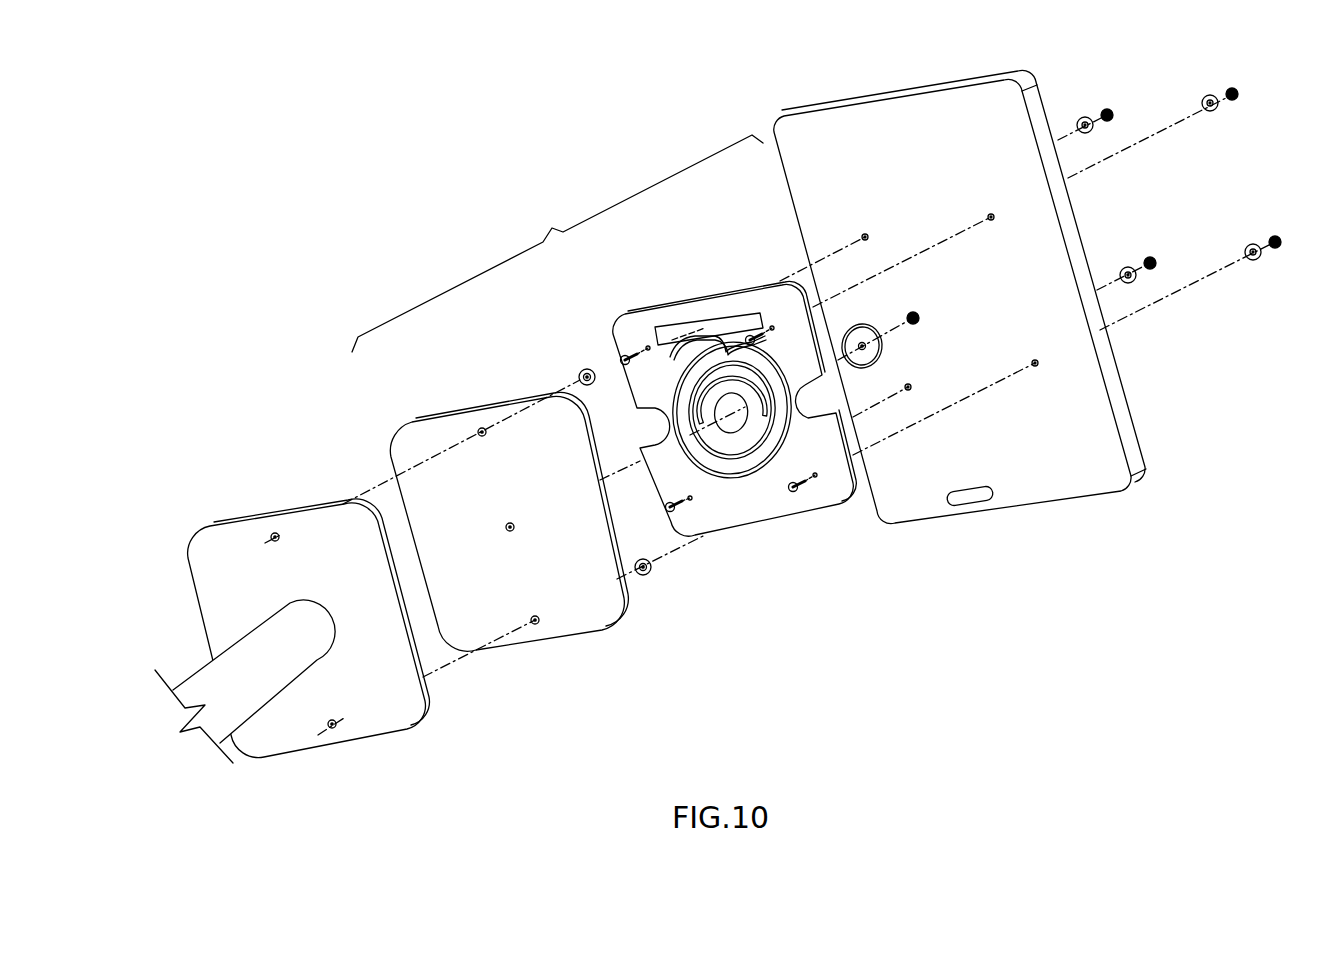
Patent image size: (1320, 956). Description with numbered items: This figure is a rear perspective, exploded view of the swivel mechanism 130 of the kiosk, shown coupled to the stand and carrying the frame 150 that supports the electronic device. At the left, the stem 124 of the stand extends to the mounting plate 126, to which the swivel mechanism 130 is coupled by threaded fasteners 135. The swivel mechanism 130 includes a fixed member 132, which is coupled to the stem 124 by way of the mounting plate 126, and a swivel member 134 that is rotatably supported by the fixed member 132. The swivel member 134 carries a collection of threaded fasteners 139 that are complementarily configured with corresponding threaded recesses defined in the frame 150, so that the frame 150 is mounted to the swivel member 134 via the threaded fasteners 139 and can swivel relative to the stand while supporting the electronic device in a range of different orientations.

The stem 124 is at (218, 674).
The mounting plate 126 is at (404, 734).
The swivel mechanism 130 is at (557, 243).
The fixed member 132 is at (390, 447).
The swivel member 134 is at (617, 332).
The threaded fasteners 135 is at (582, 372).
The threaded fasteners 139 is at (629, 364).
The frame 150 is at (1030, 84).